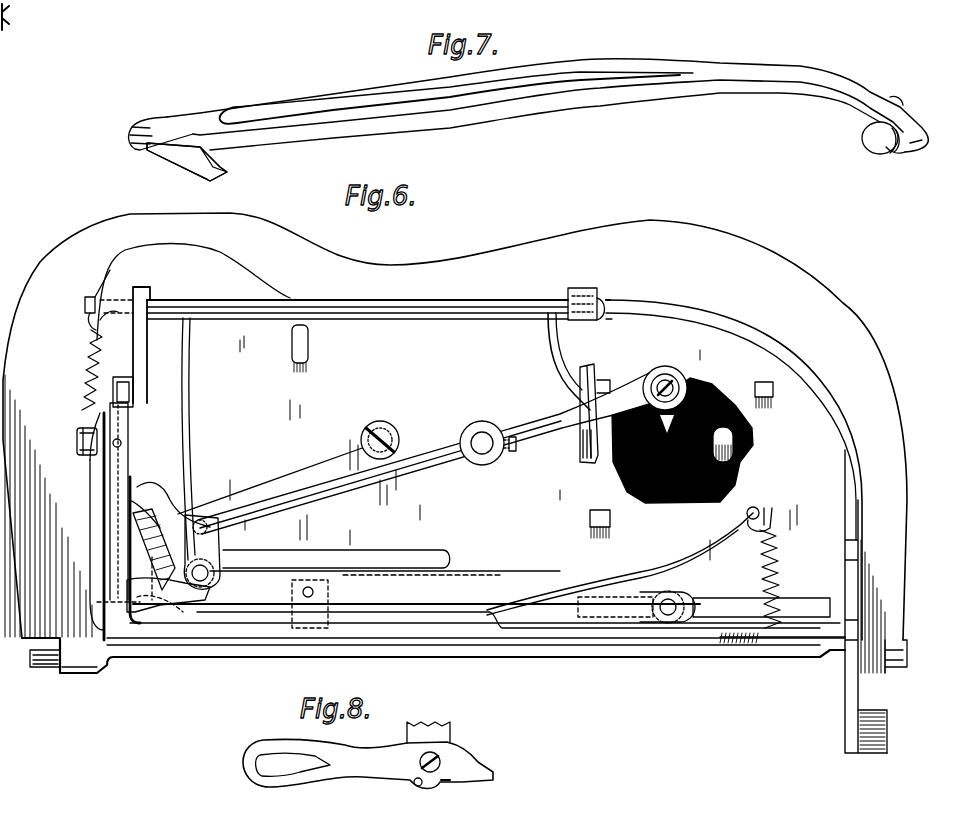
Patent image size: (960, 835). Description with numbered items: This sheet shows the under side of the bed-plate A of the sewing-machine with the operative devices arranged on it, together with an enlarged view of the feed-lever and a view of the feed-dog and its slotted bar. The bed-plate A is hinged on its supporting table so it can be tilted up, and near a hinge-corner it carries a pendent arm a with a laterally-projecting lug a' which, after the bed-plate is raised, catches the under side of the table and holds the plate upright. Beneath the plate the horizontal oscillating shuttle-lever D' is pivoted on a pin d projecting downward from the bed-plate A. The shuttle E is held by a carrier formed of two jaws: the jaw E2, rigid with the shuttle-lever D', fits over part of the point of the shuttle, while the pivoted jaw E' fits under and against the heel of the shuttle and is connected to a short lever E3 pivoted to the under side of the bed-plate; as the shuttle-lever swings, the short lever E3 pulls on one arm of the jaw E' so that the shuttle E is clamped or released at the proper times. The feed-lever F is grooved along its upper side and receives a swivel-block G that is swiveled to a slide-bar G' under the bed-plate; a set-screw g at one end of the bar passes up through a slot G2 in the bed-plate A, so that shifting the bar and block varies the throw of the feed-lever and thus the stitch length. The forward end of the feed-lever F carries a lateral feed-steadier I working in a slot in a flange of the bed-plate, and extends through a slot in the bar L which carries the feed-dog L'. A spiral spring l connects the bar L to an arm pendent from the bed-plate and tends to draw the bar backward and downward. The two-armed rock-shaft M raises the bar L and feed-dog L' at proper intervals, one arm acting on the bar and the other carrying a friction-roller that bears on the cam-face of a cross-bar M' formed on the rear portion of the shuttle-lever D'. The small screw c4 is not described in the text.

In FIG. 6, the bed-plate A is at (455, 443).
In FIG. 6, the two-armed rock-shaft M is at (448, 423).
In FIG. 6, the cross-bar M' is at (666, 419).
In FIG. 6, the pin d is at (480, 440).
In FIG. 6, the shuttle-lever D' is at (518, 425).
In FIG. 6, the adjusting screw c4 is at (380, 432).
In FIG. 6, the short lever E3 is at (416, 453).
In FIG. 6, the jaw E2 is at (165, 508).
In FIG. 6, the jaw E' is at (215, 552).
In FIG. 6, the shuttle E is at (153, 571).
In FIG. 6, the spiral spring l is at (90, 362).
In FIG. 6, the bar L is at (78, 521).
In FIG. 8, the bar L is at (368, 760).
In FIG. 8, the feed-dog L' is at (439, 727).
In FIG. 7, the feed-steadier I is at (190, 165).
In FIG. 6, the feed-steadier I is at (135, 578).
In FIG. 7, the feed-lever F is at (529, 109).
In FIG. 6, the feed-lever F is at (385, 576).
In FIG. 6, the swivel-block G is at (285, 641).
In FIG. 6, the slide-bar G' is at (620, 568).
In FIG. 6, the slot G2 is at (704, 608).
In FIG. 6, the set-screw g is at (690, 598).
In FIG. 6, the pendent arm a is at (856, 601).
In FIG. 6, the laterally-projecting lug a' is at (884, 729).